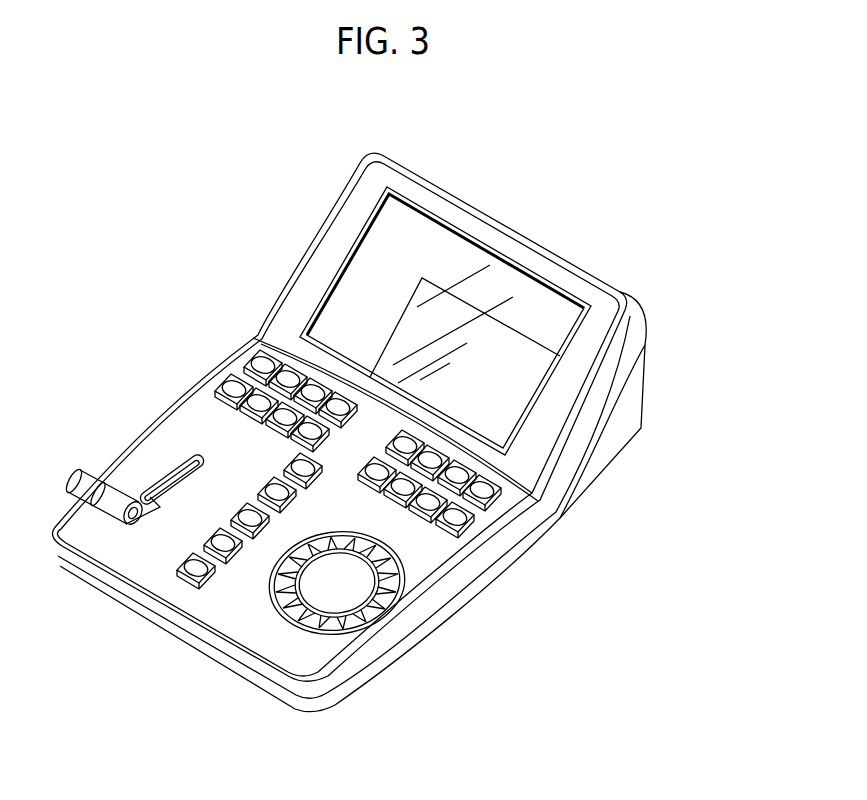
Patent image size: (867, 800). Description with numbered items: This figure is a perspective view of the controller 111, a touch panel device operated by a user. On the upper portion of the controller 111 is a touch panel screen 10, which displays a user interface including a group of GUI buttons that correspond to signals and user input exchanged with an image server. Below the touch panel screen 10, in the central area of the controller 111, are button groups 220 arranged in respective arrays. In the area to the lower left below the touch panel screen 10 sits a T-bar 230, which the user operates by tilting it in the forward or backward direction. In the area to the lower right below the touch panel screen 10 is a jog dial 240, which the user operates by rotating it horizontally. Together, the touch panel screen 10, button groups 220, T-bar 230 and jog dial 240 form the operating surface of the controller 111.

The controller 111 is at (487, 167).
The touch panel screen 10 is at (533, 303).
The button groups 220 is at (250, 517).
The T-bar 230 is at (82, 473).
The jog dial 240 is at (353, 592).